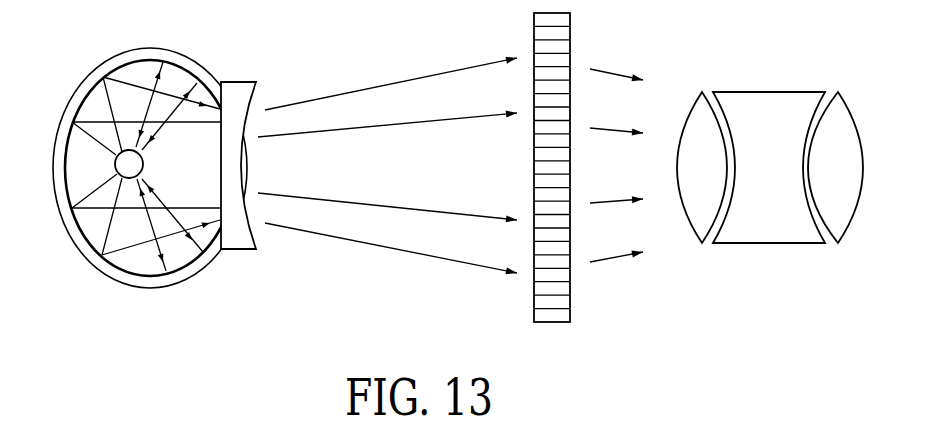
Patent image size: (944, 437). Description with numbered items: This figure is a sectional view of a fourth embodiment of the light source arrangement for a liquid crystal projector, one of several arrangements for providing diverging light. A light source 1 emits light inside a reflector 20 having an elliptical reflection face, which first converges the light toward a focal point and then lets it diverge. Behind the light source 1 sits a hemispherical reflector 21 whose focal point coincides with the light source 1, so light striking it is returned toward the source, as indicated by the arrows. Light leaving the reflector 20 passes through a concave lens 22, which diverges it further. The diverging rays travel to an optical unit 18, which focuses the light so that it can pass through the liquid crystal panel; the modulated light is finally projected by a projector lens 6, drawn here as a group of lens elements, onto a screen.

The light source 1 is at (116, 166).
The reflector 20 is at (130, 277).
The hemispherical reflector 21 is at (192, 62).
The concave lens 22 is at (242, 248).
The optical unit 18 is at (570, 21).
The projector lens 6 is at (863, 262).